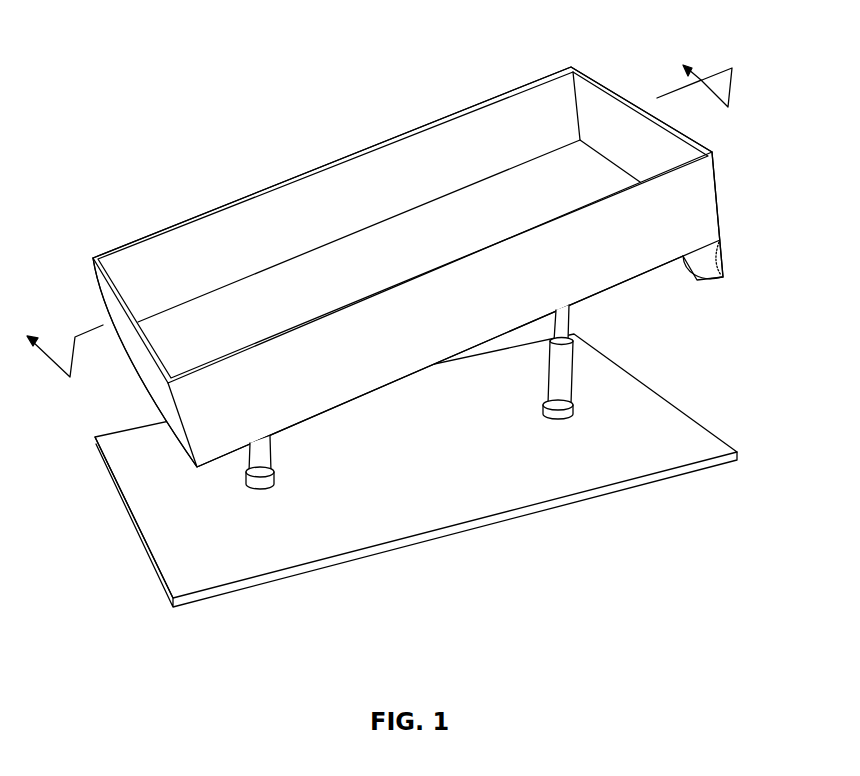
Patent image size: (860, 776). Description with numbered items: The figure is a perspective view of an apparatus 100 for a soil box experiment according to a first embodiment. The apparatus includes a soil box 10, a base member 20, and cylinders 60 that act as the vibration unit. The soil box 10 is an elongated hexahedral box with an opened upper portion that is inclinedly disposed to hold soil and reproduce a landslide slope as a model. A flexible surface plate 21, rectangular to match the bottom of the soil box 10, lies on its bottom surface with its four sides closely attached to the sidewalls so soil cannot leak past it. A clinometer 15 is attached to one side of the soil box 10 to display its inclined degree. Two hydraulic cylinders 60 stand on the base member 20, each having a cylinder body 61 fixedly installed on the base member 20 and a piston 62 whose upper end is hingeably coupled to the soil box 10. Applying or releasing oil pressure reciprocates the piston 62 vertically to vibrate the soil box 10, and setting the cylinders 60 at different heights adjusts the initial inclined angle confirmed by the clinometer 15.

The growing apparatus (assembly) 100 is at (128, 91).
The soil box 10 is at (435, 267).
The surface plate 21 is at (423, 234).
The clinometer 15 is at (726, 266).
The base member 20 is at (712, 425).
The cylinder 60 is at (477, 397).
The cylinder body 61 is at (571, 373).
The piston 62 is at (571, 323).